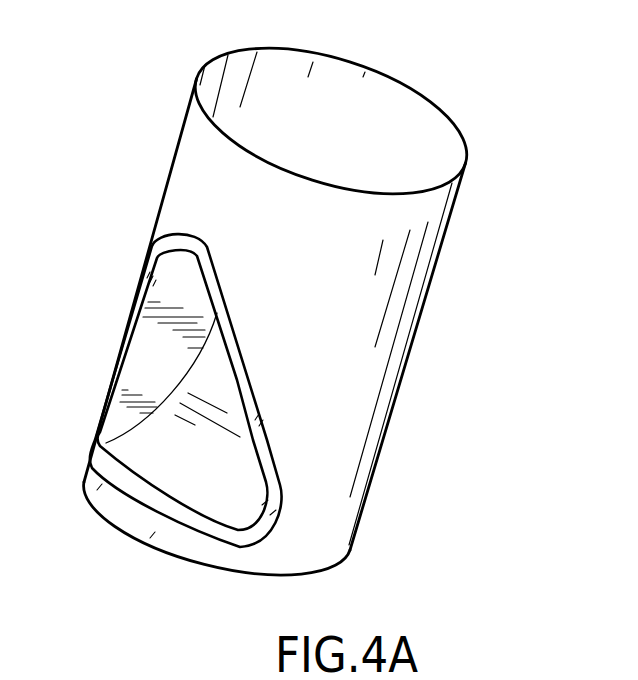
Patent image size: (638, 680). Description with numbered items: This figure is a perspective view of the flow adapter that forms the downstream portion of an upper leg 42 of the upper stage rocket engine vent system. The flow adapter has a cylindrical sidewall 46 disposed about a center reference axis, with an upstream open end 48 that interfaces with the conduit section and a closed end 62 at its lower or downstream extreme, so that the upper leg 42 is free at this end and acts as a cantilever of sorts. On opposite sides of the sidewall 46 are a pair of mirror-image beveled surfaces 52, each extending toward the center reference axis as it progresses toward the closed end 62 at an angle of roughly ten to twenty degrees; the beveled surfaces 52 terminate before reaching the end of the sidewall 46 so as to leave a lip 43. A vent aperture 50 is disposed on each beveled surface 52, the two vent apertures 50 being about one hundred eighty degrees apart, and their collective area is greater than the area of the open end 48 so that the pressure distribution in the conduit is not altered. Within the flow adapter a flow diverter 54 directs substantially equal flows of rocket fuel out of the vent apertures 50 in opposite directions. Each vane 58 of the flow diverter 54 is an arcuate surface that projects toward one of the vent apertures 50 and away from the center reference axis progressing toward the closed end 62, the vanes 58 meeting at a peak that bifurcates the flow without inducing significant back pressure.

The open end 48 is at (392, 93).
The sidewall 46 is at (447, 227).
The closed end 62 is at (182, 561).
The beveled surface 52 is at (151, 248).
The vent aperture 50 is at (176, 252).
The flow diverter 54 is at (180, 383).
The vane 58 is at (208, 459).
The lip 43 is at (126, 510).
The upper leg 42 is at (563, 671).